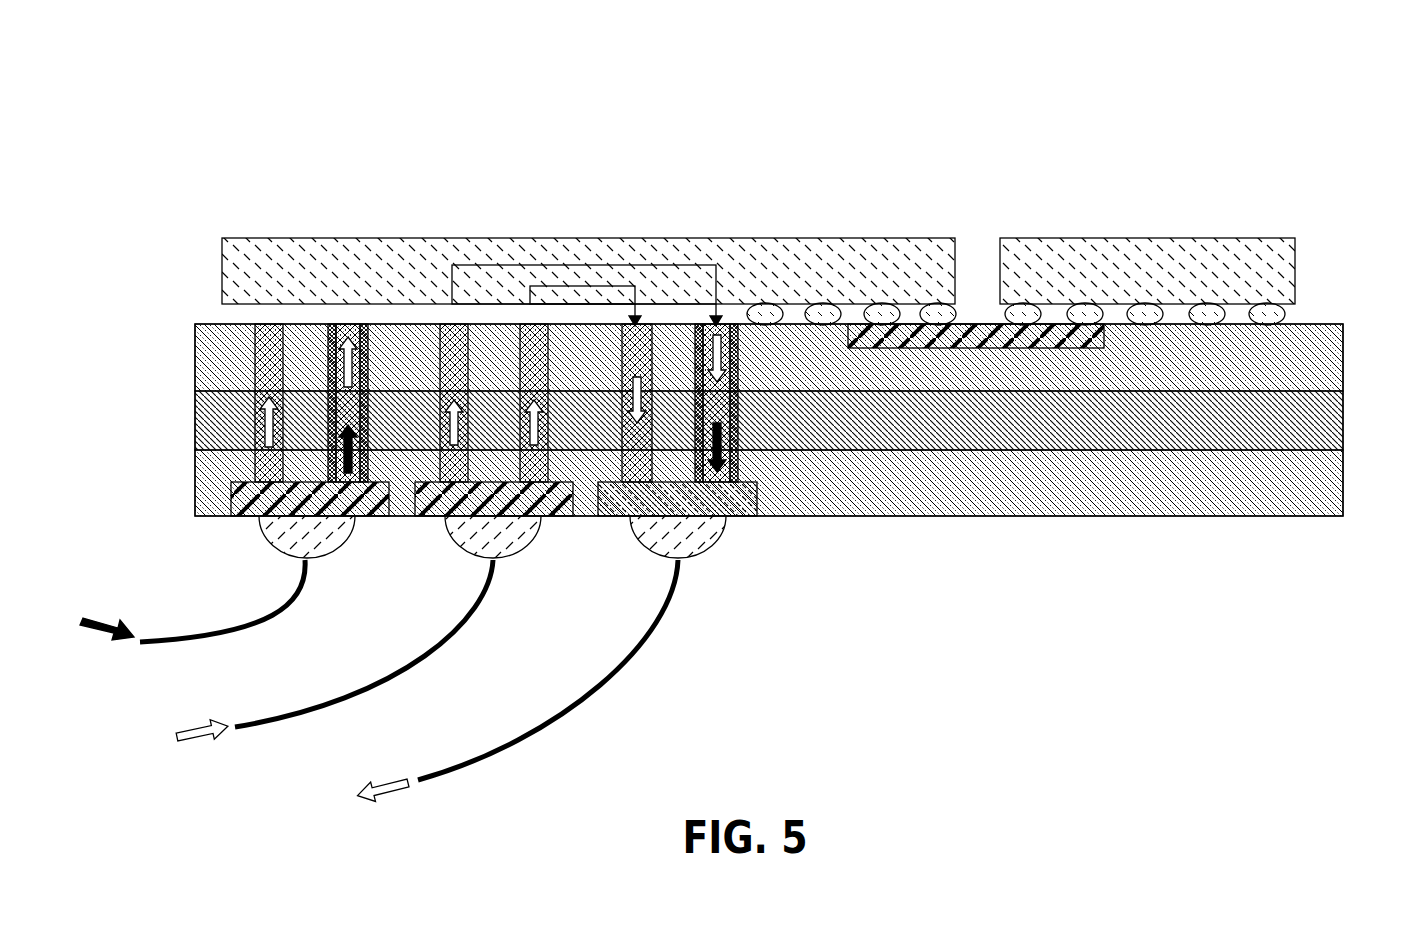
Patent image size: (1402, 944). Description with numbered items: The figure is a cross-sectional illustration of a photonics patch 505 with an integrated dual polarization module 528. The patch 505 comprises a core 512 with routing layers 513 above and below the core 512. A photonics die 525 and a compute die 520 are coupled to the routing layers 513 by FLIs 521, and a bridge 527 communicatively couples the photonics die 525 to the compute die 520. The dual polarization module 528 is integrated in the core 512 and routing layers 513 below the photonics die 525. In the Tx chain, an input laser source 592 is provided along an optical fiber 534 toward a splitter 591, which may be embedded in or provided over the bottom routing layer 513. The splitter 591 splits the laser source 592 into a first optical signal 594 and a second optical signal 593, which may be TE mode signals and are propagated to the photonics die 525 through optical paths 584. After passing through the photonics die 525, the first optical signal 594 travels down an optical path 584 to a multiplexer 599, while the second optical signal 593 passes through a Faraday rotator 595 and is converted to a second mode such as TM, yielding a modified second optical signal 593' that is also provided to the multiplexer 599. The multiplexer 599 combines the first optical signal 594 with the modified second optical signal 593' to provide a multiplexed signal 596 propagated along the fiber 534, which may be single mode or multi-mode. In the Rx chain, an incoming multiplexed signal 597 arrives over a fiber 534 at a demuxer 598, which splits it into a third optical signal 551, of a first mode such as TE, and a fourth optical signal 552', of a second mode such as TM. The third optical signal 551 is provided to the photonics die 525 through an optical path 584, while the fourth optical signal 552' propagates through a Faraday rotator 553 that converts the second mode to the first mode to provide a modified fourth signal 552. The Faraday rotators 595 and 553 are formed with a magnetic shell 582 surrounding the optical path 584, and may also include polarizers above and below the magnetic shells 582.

The photonics patch 505 is at (1182, 110).
The routing layers 513 is at (1313, 338).
The core 512 is at (1330, 428).
The dual polarization module 528 is at (751, 418).
The third optical signal 551 is at (190, 406).
The optical paths 584 is at (272, 335).
The magnetic shell 582 is at (298, 390).
The modified fourth signal 552 is at (361, 328).
The Faraday rotator 553 is at (372, 418).
The splitter 591 is at (540, 505).
The first optical signal 594 is at (598, 385).
The second optical signal 593 is at (580, 386).
The Faraday rotator 595 is at (738, 418).
The demuxer 598 is at (369, 518).
The multiplexer 599 is at (742, 518).
The fourth optical signal 552' is at (267, 537).
The modified second optical signal 593' is at (683, 558).
The optical fiber 534 is at (263, 632).
The incoming multiplexed signal 597 is at (112, 618).
The input laser source 592 is at (195, 740).
The multiplexed signal 596 is at (390, 795).
The photonics die 525 is at (878, 252).
The bridge 527 is at (970, 320).
The compute die 520 is at (1140, 256).
The FLIs 521 is at (1207, 310).